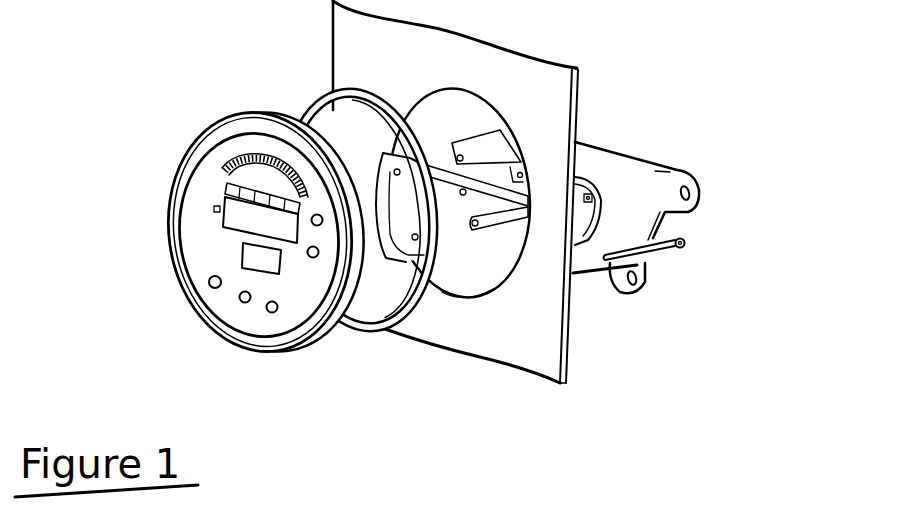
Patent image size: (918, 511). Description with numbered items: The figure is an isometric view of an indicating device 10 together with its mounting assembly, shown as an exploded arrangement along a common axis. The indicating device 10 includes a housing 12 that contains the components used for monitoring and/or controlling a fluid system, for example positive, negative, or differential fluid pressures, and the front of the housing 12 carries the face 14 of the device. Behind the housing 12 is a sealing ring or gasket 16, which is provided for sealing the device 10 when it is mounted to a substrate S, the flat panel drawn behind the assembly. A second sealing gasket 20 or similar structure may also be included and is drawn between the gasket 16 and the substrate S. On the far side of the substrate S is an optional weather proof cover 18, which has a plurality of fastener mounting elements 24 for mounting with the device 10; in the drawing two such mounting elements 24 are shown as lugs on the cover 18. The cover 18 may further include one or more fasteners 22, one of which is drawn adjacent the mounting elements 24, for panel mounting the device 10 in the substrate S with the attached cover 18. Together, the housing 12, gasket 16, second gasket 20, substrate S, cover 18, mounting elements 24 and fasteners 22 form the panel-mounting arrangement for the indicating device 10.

The indicating device 10 is at (127, 131).
The substrate S is at (548, 76).
The housing 12 is at (312, 340).
The meter face 14 is at (204, 247).
The sealing ring or gasket 16 is at (296, 101).
The weather proof cover 18 is at (677, 170).
The second sealing gasket 20 is at (435, 166).
The fasteners 22 is at (660, 252).
The fastener mounting elements 24 is at (697, 200).